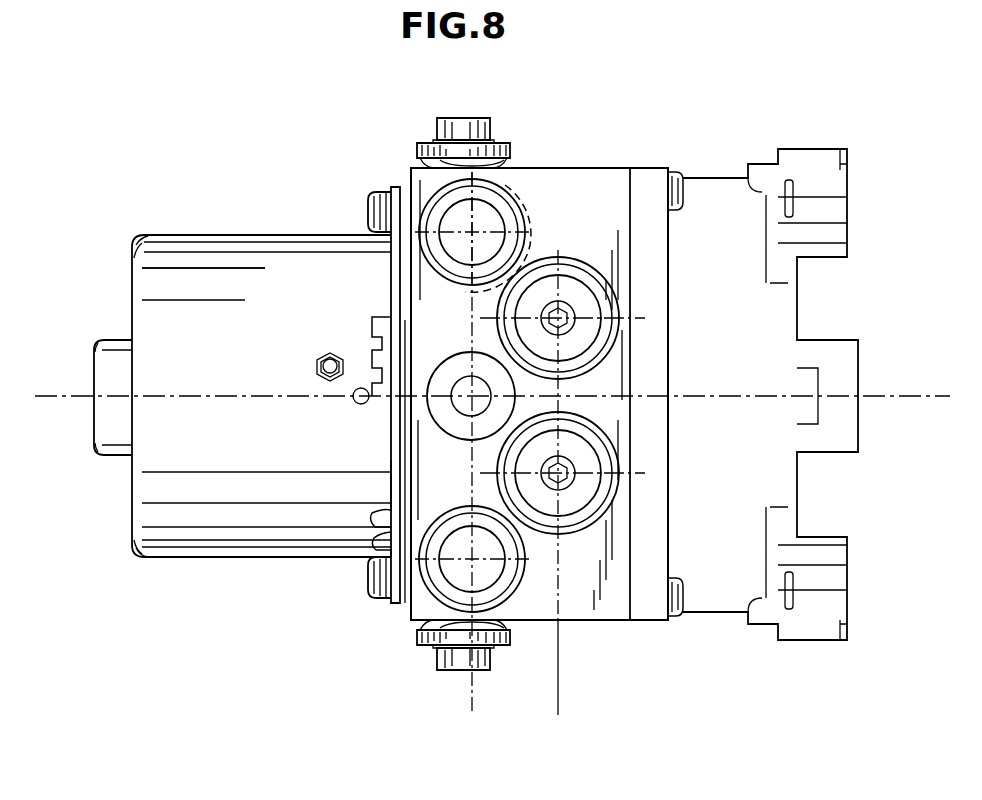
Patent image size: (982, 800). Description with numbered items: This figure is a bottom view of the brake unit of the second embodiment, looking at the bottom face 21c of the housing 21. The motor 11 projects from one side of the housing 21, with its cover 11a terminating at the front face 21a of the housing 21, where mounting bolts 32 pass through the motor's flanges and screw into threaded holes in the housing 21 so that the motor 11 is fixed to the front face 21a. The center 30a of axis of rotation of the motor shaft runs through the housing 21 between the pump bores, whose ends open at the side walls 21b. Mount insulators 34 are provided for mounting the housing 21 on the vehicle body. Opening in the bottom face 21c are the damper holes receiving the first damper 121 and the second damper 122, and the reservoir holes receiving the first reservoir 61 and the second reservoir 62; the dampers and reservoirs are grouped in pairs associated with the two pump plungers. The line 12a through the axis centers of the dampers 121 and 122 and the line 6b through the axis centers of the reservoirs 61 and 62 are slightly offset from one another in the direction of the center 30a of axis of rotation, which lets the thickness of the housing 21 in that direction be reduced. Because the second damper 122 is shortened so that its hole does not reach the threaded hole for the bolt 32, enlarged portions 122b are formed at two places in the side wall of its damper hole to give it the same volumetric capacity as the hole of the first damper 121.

The motor 11 is at (218, 233).
The cover 11a is at (172, 290).
The center of axis of rotation 30a is at (182, 392).
The housing 21 is at (634, 168).
The front face 21a is at (405, 283).
The side wall 21b is at (548, 168).
The bottom face 21c is at (620, 377).
The mounting bolt 32 is at (370, 212).
The mount insulator 34 is at (468, 118).
The second damper 122 is at (440, 203).
The enlarged portion 122b is at (520, 213).
The first damper 121 is at (442, 587).
The line 12a is at (470, 703).
The second reservoir 62 is at (576, 268).
The first reservoir 61 is at (582, 520).
The line 6b is at (559, 700).